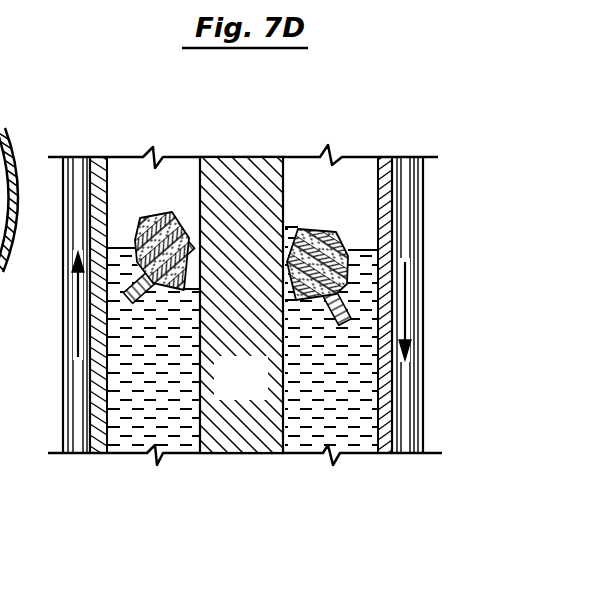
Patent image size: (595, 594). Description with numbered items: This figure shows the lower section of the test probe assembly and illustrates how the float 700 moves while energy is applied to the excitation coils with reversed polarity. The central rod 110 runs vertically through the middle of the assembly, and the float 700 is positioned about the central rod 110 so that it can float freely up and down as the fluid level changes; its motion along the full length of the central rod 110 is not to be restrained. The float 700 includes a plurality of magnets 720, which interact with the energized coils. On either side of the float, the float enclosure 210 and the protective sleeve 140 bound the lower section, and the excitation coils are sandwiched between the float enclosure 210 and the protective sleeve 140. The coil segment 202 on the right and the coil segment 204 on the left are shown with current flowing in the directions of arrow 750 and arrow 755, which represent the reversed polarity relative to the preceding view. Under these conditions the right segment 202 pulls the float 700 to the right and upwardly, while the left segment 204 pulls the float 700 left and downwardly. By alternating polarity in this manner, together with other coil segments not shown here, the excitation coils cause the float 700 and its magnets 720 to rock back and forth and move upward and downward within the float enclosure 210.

The central rod 110 is at (262, 393).
The protective sleeve 140 is at (8, 128).
The coil segment 202 is at (78, 157).
The coil segment 204 is at (405, 157).
The float enclosure 210 is at (100, 455).
The float 700 is at (318, 228).
The magnets 720 is at (152, 297).
The arrow 750 is at (79, 338).
The arrow 755 is at (410, 295).